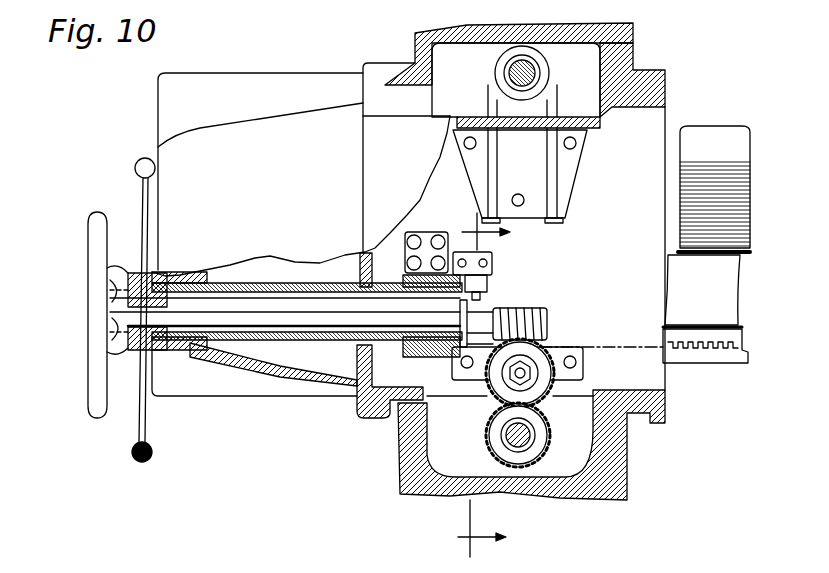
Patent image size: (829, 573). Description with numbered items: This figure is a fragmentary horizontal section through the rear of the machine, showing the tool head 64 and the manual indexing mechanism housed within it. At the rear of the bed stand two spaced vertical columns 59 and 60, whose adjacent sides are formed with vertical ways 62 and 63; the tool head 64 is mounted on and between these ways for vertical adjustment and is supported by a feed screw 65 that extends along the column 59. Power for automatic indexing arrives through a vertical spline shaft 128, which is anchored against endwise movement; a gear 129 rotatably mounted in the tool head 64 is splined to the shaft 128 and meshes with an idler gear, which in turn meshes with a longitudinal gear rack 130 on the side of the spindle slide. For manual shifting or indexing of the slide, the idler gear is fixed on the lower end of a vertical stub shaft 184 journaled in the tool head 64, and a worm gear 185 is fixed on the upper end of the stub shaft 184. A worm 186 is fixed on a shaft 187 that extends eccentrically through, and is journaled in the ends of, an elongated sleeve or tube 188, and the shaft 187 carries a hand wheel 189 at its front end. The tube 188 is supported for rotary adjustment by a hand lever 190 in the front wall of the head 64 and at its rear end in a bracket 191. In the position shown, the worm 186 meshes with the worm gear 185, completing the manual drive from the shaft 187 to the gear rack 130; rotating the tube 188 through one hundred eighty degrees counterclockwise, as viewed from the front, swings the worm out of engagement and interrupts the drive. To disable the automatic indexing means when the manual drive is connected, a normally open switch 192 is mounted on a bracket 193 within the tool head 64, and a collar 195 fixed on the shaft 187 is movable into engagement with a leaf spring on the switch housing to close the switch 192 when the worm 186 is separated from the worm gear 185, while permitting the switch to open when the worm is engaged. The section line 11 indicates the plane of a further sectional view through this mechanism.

The section line 11 is at (500, 385).
The vertical column 59 is at (636, 34).
The vertical column 60 is at (628, 472).
The vertical way 62 is at (418, 87).
The vertical way 63 is at (390, 410).
The tool head 64 is at (736, 128).
The feed screw 65 is at (515, 66).
The vertical spline shaft 128 is at (497, 438).
The gear 129 is at (522, 468).
The longitudinal gear rack 130 is at (690, 350).
The vertical stub shaft 184 is at (537, 380).
The worm gear 185 is at (541, 350).
The worm 186 is at (551, 312).
The shaft 187 is at (248, 310).
The sleeve or tube 188 is at (305, 288).
The hand wheel 189 is at (88, 385).
The hand lever 190 is at (139, 432).
The bracket 191 is at (406, 280).
The normally open switch 192 is at (489, 286).
The bracket 193 is at (494, 266).
The collar 195 is at (472, 312).